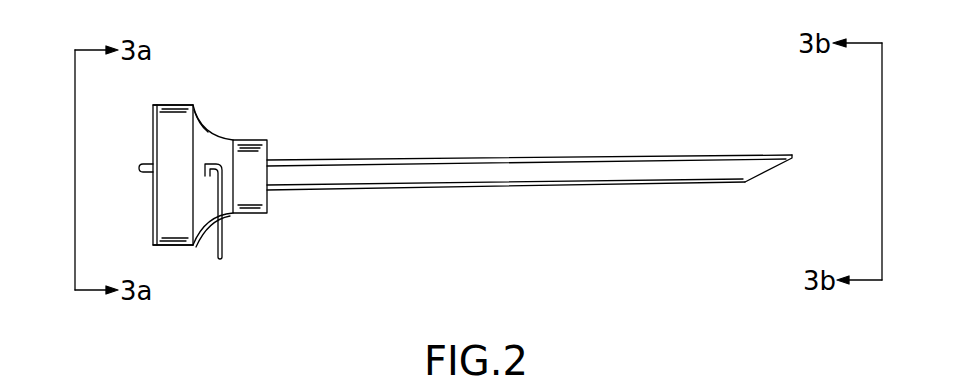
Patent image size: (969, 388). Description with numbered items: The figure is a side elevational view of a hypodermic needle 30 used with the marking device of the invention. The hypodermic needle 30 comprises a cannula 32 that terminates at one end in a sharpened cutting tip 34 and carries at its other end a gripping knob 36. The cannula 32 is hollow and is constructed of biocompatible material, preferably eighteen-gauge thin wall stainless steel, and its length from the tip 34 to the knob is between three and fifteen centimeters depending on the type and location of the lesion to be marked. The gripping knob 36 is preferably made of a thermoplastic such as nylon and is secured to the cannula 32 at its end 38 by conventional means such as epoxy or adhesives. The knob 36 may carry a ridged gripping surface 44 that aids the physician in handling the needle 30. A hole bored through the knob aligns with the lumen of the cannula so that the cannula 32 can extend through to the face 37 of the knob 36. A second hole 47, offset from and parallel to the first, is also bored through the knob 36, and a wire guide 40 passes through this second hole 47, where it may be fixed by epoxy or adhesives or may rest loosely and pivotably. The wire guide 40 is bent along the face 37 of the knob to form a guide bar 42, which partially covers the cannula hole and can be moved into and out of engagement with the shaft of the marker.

The hypodermic needle 30 is at (397, 90).
The cannula 32 is at (521, 160).
The sharpened cutting tip 34 is at (790, 150).
The gripping knob 36 is at (176, 92).
The face of knob 37 is at (153, 118).
The end of cannula 38 is at (267, 203).
The wire guide 40 is at (224, 258).
The guide bar 42 is at (140, 169).
The ridged gripping surface 44 is at (175, 246).
The second hole 47 is at (205, 165).